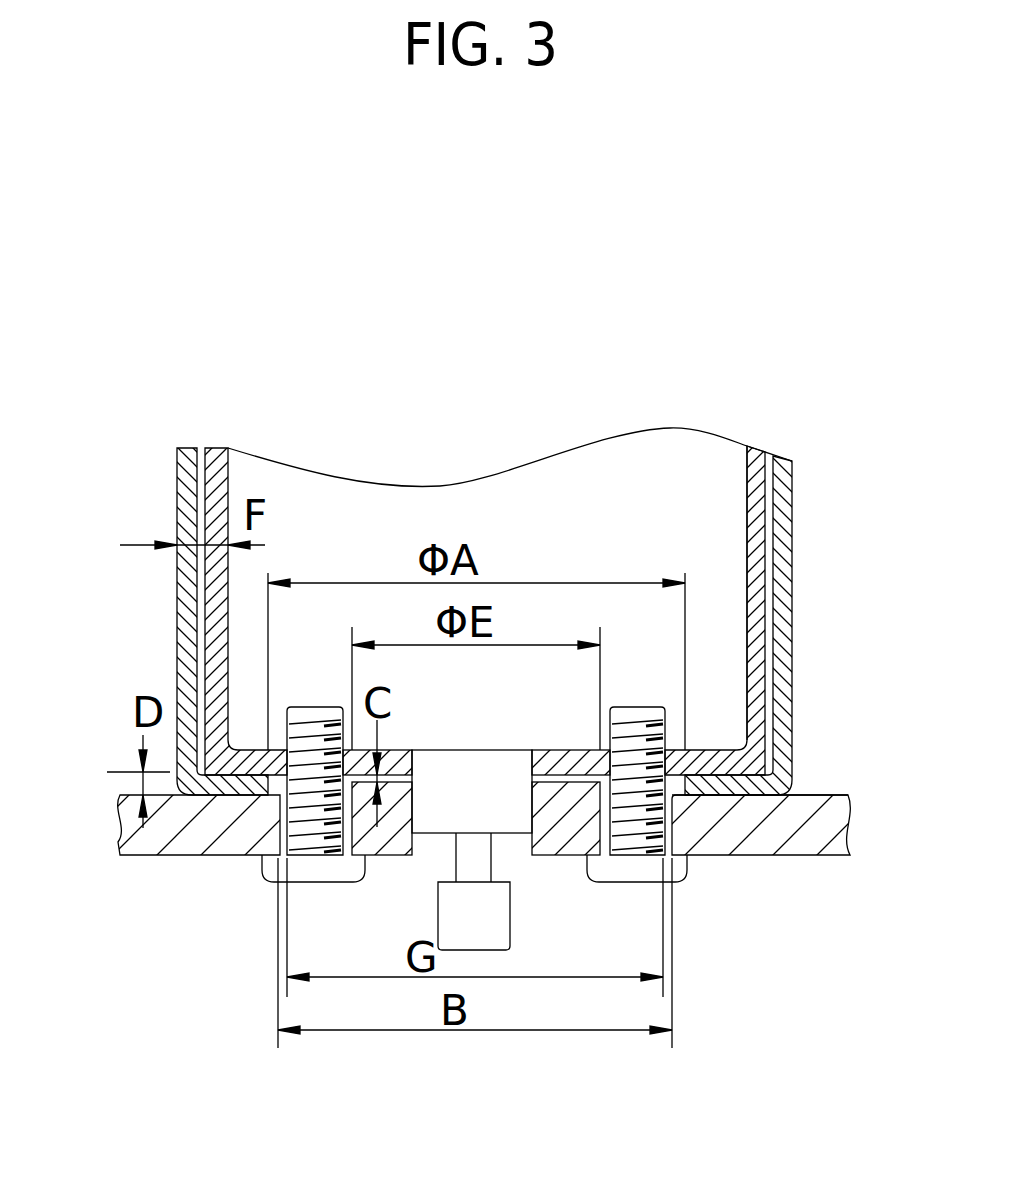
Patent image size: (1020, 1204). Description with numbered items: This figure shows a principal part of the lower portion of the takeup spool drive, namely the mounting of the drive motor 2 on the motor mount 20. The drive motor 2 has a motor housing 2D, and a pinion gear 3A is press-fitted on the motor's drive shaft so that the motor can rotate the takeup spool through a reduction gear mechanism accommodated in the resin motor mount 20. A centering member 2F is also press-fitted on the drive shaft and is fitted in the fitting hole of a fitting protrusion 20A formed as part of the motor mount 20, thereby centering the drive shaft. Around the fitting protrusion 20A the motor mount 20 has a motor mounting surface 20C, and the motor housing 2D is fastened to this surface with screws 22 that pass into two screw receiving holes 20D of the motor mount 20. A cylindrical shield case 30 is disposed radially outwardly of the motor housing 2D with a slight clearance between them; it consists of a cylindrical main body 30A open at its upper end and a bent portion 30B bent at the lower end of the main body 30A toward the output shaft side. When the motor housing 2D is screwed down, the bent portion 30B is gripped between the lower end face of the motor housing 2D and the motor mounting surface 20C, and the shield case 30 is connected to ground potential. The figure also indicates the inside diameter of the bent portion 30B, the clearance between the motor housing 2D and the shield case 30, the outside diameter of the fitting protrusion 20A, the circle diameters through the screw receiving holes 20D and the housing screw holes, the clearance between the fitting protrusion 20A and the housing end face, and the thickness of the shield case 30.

The drive motor 2 is at (592, 465).
The motor housing 2D is at (747, 505).
The centering member 2F is at (473, 802).
The pinion gear 3A is at (497, 903).
The motor mount 20 is at (807, 850).
The fitting protrusion 20A is at (382, 853).
The motor mounting surface 20C is at (820, 797).
The screw receiving holes 20D is at (255, 845).
The screws 22 is at (307, 853).
The shield case 30 is at (520, 569).
The cylindrical main body 30A is at (790, 513).
The bent portion 30B is at (780, 750).